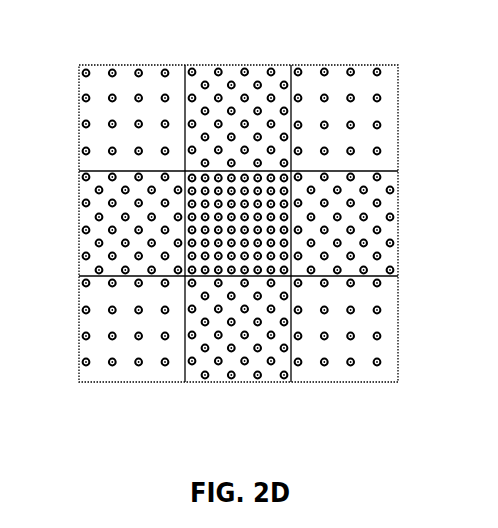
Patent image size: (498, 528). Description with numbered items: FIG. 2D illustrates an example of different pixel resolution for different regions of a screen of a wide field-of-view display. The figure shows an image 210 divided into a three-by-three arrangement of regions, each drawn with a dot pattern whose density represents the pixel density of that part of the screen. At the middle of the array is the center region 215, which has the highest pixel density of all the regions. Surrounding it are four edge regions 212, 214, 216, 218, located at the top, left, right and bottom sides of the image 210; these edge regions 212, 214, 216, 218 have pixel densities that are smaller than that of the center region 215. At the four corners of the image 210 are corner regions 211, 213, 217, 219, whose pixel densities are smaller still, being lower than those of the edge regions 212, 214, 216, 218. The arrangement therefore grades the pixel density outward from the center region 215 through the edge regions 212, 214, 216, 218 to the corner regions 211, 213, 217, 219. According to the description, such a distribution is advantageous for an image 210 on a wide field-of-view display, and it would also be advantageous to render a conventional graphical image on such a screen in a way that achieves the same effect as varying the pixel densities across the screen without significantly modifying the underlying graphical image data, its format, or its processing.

The image 210 is at (93, 55).
The corner region 211 is at (82, 77).
The edge region 212 is at (221, 74).
The corner region 213 is at (397, 66).
The edge region 214 is at (79, 218).
The center region 215 is at (285, 192).
The edge region 216 is at (387, 230).
The corner region 217 is at (79, 346).
The edge region 218 is at (190, 377).
The corner region 219 is at (353, 376).